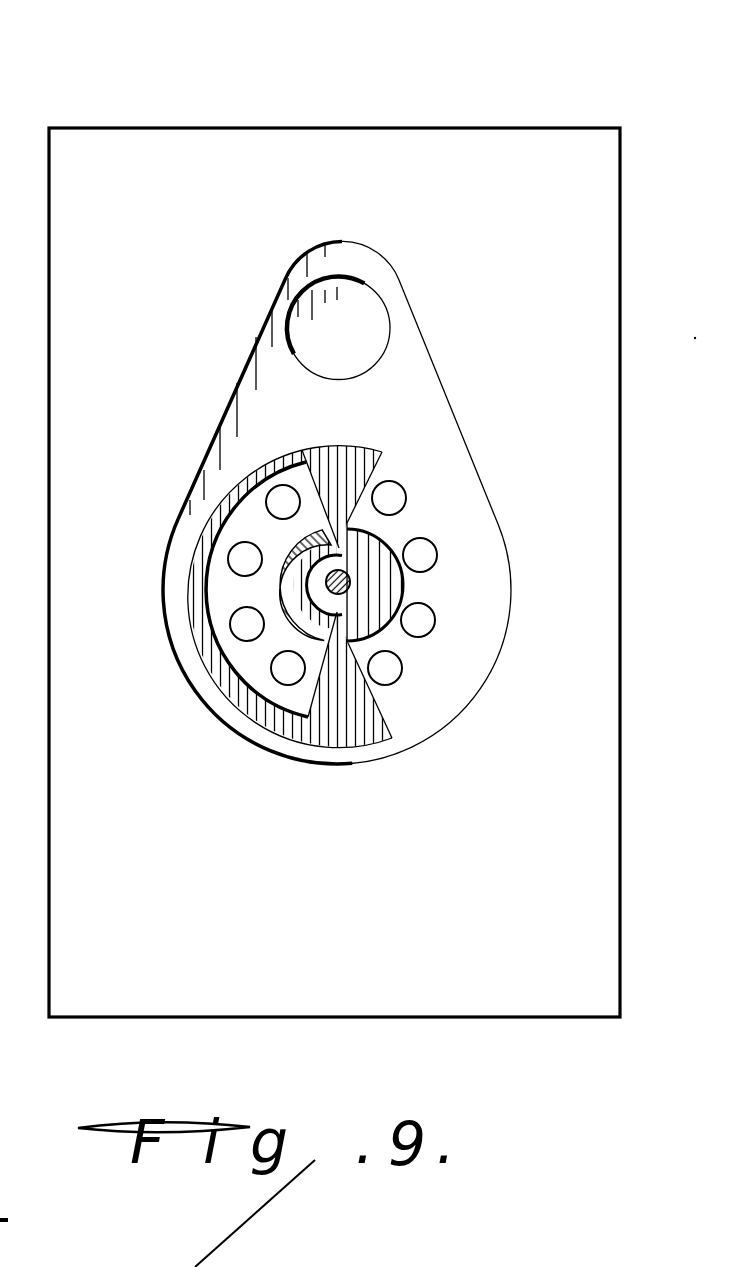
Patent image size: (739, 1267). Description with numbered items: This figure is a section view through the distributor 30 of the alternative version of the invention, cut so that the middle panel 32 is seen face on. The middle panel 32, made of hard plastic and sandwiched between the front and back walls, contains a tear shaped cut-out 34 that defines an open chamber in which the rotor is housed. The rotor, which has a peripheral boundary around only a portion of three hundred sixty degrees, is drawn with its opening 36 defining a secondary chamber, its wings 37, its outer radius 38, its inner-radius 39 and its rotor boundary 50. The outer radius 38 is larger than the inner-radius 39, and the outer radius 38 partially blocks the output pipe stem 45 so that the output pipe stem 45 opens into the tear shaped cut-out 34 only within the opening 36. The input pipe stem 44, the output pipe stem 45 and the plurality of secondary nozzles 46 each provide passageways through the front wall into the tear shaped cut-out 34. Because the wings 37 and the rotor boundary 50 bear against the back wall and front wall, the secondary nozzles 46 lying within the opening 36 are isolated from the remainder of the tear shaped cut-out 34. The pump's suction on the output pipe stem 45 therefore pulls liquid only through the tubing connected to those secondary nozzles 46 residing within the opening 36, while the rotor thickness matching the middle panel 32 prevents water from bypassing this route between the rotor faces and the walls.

The distributor 30 is at (140, 37).
The middle panel 32 is at (92, 137).
The tear shaped cut-out 34 is at (418, 361).
The opening 36 is at (262, 486).
The wings 37 is at (366, 462).
The outer radius 38 is at (388, 587).
The inner-radius 39 is at (320, 610).
The input pipe stem 44 is at (353, 362).
The output pipe stem 45 is at (297, 548).
The secondary nozzles 46 is at (406, 497).
The rotor boundary 50 is at (200, 527).